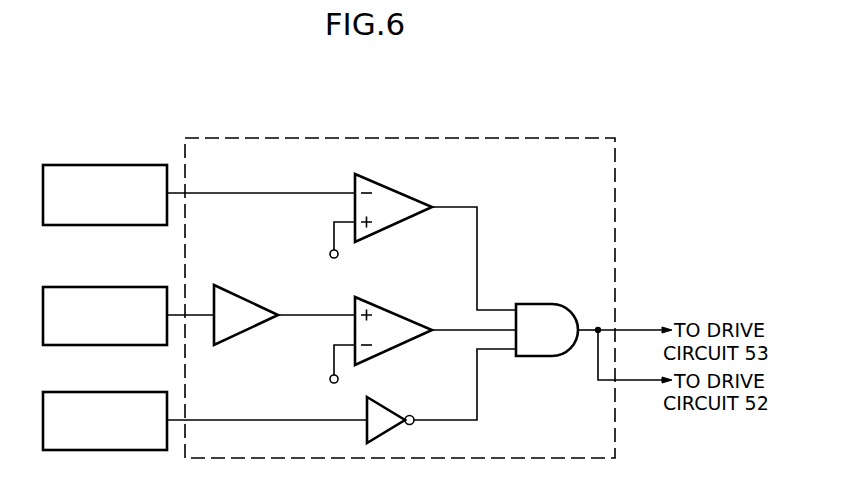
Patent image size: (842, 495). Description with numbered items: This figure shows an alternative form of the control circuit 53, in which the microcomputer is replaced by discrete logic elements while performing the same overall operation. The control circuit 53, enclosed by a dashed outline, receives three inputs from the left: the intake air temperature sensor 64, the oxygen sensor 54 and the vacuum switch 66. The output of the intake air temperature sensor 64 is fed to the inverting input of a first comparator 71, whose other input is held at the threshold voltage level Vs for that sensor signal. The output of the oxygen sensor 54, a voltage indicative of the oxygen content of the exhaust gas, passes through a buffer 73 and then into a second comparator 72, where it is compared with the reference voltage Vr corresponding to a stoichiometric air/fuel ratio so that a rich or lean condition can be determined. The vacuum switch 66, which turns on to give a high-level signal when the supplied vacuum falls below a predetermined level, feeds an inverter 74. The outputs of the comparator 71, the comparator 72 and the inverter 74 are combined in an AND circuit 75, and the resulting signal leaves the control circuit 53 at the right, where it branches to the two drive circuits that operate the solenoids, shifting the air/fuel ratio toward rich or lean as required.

The control circuit 53 is at (617, 228).
The oxygen sensor 54 is at (115, 287).
The intake air temperature sensor 64 is at (115, 165).
The vacuum switch 66 is at (117, 392).
The comparator 71 is at (412, 172).
The comparator 72 is at (410, 292).
The buffer 73 is at (237, 294).
The inverter 74 is at (400, 385).
The AND circuit 75 is at (558, 304).